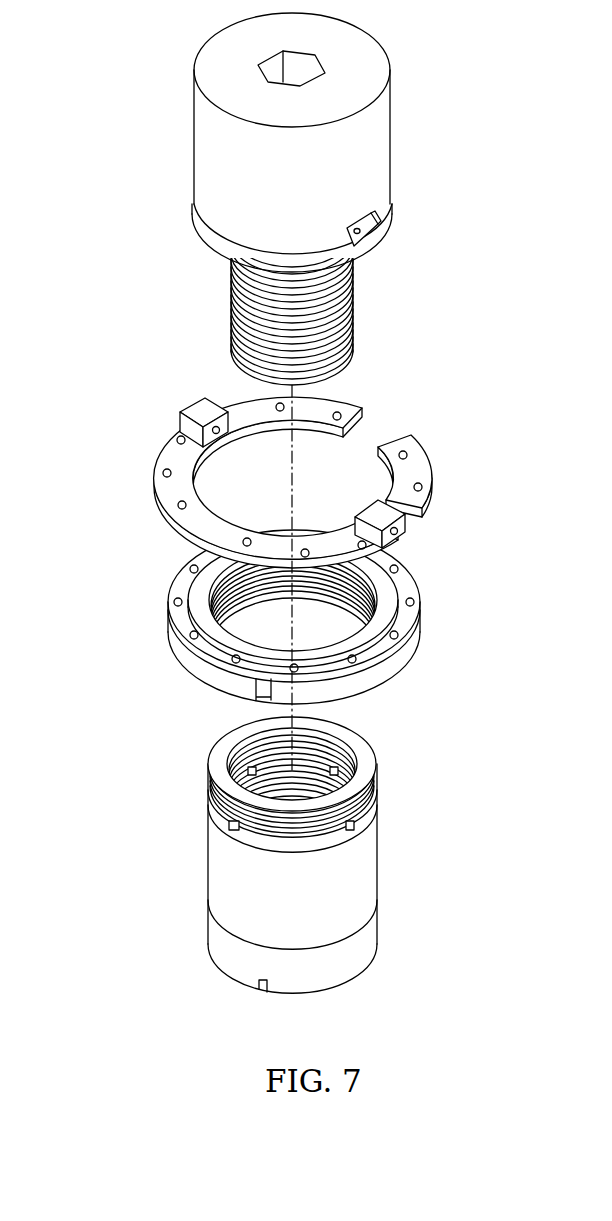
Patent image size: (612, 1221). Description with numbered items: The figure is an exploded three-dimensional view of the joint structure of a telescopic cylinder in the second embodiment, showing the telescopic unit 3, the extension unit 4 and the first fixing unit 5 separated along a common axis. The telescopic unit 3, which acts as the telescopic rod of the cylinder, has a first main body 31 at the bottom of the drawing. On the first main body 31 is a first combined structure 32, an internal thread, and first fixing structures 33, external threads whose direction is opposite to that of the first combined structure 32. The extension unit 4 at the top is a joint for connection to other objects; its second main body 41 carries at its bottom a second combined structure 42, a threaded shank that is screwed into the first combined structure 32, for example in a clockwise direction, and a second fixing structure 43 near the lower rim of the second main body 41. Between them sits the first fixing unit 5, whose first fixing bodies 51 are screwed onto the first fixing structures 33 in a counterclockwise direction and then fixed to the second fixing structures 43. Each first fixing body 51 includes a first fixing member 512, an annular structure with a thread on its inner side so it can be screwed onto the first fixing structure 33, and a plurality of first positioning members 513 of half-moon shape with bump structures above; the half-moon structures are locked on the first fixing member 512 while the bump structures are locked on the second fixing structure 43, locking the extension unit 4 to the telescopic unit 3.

The telescopic unit 3 is at (262, 855).
The first main body 31 is at (347, 902).
The first combined structure 32 is at (353, 746).
The first fixing structures 33 is at (378, 810).
The extension unit 4 is at (261, 199).
The second main body 41 is at (340, 140).
The second combined structure 42 is at (352, 322).
The second fixing structures 43 is at (378, 234).
The first fixing unit 5 is at (300, 547).
The first fixing bodies 51 is at (310, 547).
The first fixing member 512 is at (197, 672).
The first positioning members 513 is at (408, 472).